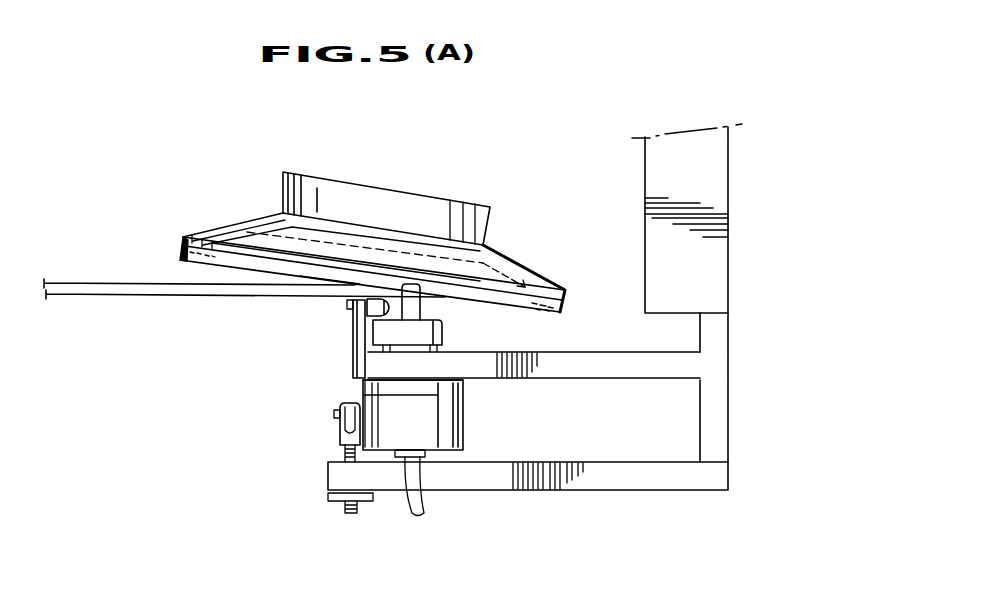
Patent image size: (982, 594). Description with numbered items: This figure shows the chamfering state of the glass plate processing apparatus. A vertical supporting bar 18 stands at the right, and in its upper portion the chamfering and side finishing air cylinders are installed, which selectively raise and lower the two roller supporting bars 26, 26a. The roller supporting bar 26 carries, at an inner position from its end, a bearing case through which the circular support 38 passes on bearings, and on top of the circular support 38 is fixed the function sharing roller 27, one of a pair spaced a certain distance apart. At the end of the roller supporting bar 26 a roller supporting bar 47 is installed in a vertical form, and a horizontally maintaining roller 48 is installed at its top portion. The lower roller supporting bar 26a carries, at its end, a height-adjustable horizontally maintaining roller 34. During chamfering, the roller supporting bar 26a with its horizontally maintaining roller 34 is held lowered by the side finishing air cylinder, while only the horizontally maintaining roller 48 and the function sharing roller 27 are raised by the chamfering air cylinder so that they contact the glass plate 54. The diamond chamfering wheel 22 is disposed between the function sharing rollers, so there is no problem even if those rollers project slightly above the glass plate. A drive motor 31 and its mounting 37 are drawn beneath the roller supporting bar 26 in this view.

The diamond chamfering wheel 22 is at (345, 193).
The vertical supporting bar 18 is at (703, 238).
The table 54 is at (123, 288).
The function sharing roller 27 is at (327, 285).
The horizontally maintaining roller 48 is at (348, 310).
The roller supporting bar 47 is at (352, 371).
The circular support 38 is at (445, 335).
The flange 37 is at (467, 388).
The horizontally maintaining roller 34 is at (336, 430).
The motor 31 is at (467, 430).
The roller supporting bar 26 is at (673, 372).
The roller supporting bar 26a is at (618, 483).